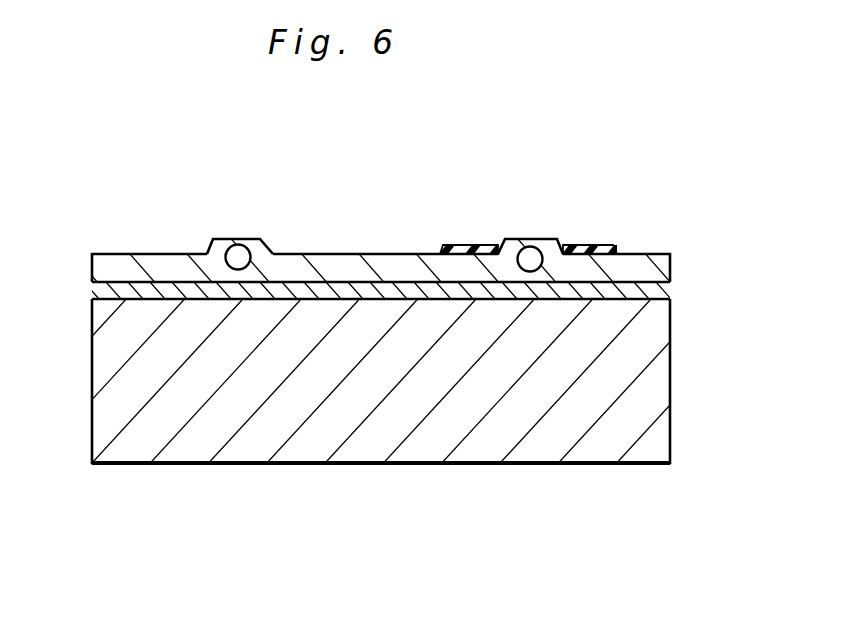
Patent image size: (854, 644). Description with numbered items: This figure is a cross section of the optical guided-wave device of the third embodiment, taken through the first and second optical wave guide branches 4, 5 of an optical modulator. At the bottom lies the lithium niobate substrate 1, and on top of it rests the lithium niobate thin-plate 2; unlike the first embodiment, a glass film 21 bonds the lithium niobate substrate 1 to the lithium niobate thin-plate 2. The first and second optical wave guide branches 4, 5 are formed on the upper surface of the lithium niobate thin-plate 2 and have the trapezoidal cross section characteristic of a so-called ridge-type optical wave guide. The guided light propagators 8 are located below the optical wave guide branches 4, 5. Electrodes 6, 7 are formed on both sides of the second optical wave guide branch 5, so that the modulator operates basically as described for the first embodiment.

The lithium niobate substrate 1 is at (657, 375).
The lithium niobate thin-plate 2 is at (662, 272).
The glass film 21 is at (142, 289).
The first optical wave guide branch 4 is at (243, 236).
The second optical wave guide branch 5 is at (545, 237).
The electrode 6 is at (470, 245).
The electrode 7 is at (605, 247).
The guided light propagators 8 is at (240, 270).